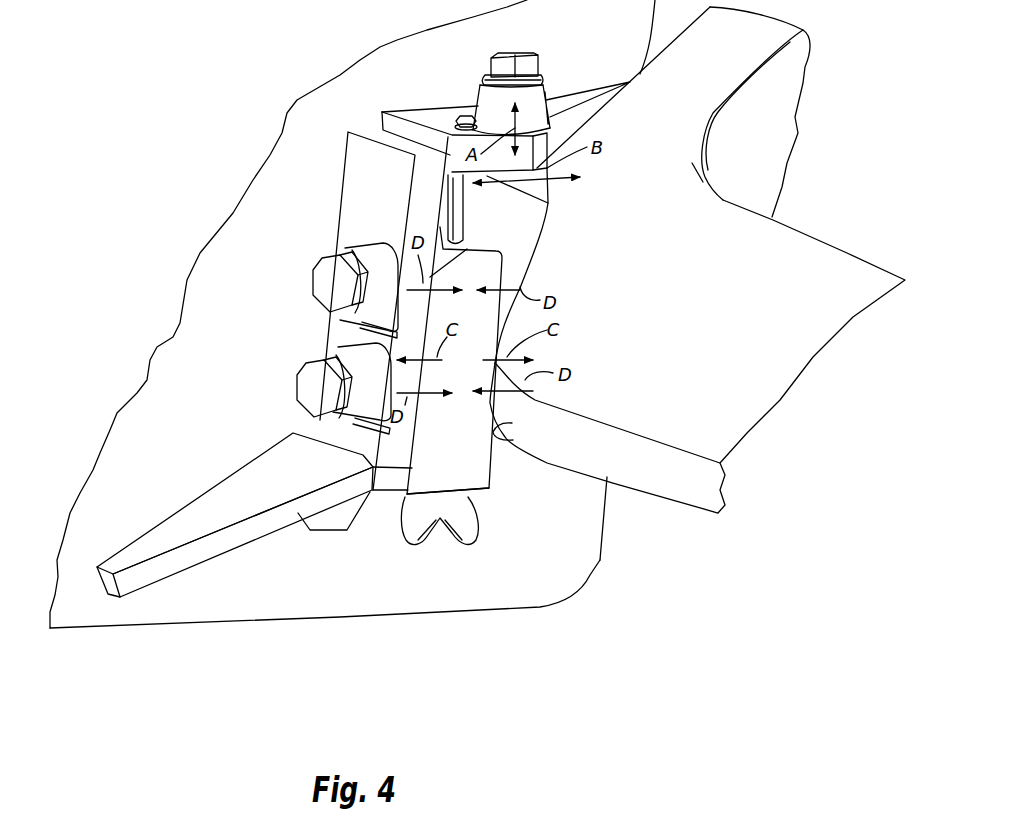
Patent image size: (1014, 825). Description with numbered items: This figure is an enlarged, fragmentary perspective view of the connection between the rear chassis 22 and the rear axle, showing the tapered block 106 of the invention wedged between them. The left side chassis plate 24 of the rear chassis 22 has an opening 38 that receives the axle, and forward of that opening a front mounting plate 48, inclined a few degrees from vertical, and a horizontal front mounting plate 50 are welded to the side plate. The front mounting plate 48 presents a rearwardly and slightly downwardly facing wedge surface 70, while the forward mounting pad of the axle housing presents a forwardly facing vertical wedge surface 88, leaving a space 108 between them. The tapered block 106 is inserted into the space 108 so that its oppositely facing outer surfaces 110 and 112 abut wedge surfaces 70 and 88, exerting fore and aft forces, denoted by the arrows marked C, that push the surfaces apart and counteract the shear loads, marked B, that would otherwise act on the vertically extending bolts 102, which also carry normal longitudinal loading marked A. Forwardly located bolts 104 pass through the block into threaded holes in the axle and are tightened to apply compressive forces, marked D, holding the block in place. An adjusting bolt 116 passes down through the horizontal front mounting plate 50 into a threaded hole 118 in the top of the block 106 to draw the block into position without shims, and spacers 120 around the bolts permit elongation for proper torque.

The rear chassis 22 is at (95, 630).
The left side chassis plate 24 is at (270, 155).
The opening 38 is at (641, 527).
The front mounting plate 48 is at (333, 523).
The horizontal front mounting plate 50 is at (445, 106).
The wedge surface 70 is at (408, 493).
The wedge surface 88 is at (513, 440).
The bolts 102 is at (540, 53).
The bolts 104 is at (320, 263).
The tapered block 106 is at (495, 489).
The space 108 is at (497, 202).
The outer surface 110 is at (277, 447).
The outer surface 112 is at (487, 463).
The adjusting bolt 116 is at (453, 117).
The threaded hole 118 is at (465, 233).
The spacers 120 is at (547, 90).